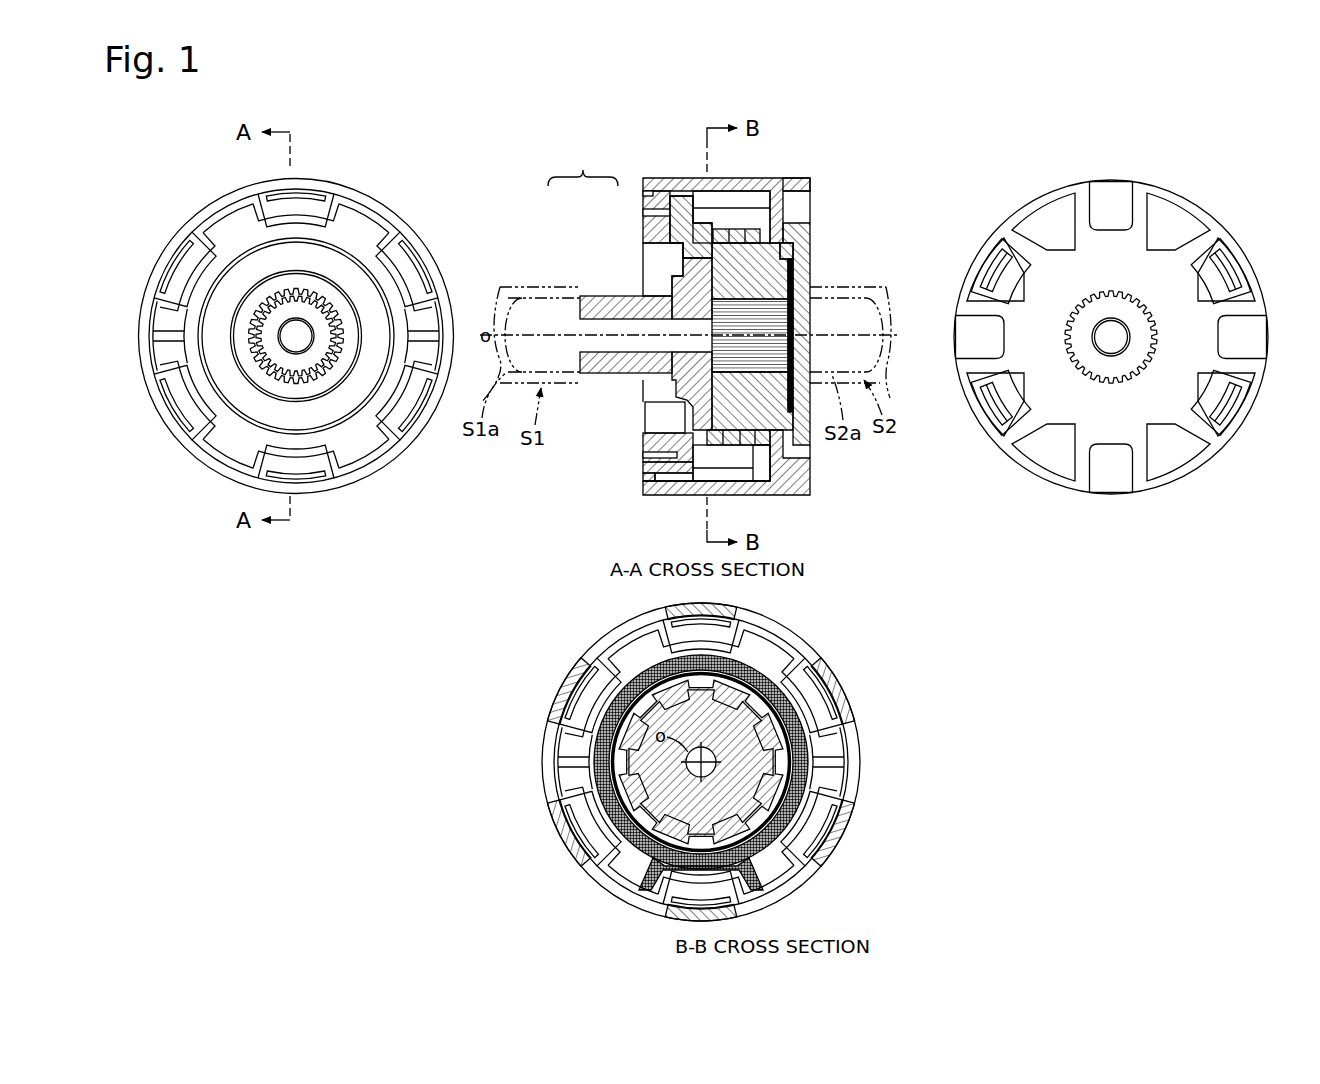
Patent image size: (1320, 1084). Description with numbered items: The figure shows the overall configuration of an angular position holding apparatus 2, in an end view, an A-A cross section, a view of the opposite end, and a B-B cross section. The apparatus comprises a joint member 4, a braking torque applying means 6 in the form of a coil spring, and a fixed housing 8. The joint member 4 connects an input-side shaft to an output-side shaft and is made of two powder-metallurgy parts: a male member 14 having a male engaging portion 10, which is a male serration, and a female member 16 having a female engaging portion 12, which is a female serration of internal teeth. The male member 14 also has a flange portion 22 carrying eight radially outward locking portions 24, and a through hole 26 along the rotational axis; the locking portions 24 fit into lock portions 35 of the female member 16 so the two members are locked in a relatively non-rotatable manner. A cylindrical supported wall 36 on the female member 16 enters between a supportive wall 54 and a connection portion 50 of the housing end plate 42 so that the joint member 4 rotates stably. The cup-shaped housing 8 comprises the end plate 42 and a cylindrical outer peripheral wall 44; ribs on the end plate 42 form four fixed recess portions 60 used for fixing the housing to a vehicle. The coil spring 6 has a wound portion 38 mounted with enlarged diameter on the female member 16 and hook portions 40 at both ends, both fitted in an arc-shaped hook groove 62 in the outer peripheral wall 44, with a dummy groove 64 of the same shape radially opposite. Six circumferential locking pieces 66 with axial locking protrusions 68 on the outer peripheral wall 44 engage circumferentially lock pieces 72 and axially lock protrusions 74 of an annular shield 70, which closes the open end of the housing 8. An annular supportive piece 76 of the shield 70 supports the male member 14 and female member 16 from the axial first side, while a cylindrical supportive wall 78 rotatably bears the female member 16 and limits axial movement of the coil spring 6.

The angular position holding apparatus 2 is at (728, 106).
The joint member 4 is at (583, 163).
The braking torque applying means 6 is at (728, 447).
The fixed housing 8 is at (151, 268).
The male engaging portion 10 is at (322, 300).
The female engaging portion 12 is at (748, 305).
The male member 14 is at (660, 280).
The female member 16 is at (727, 253).
The flange portion 22 is at (666, 393).
The locking portions 24 is at (642, 250).
The through hole 26 is at (677, 343).
The lock portion 35 is at (700, 242).
The supported wall 36 is at (793, 252).
The wound portion 38 is at (808, 768).
The hook portions 40 is at (762, 464).
The end plate 42 is at (786, 196).
The outer peripheral wall 44 is at (777, 177).
The connection portion 50 is at (746, 230).
The supportive wall 54 is at (795, 267).
The fixed recess portions 60 is at (1110, 202).
The hook groove 62 is at (707, 474).
The dummy groove 64 is at (703, 636).
The circumferential locking pieces 66 is at (165, 245).
The axial locking protrusion 68 is at (643, 471).
The shield 70 is at (153, 318).
The circumferentially lock pieces 72 is at (210, 200).
The axially lock protrusions 74 is at (662, 490).
The supportive piece 76 is at (668, 415).
The supportive wall 78 is at (680, 476).